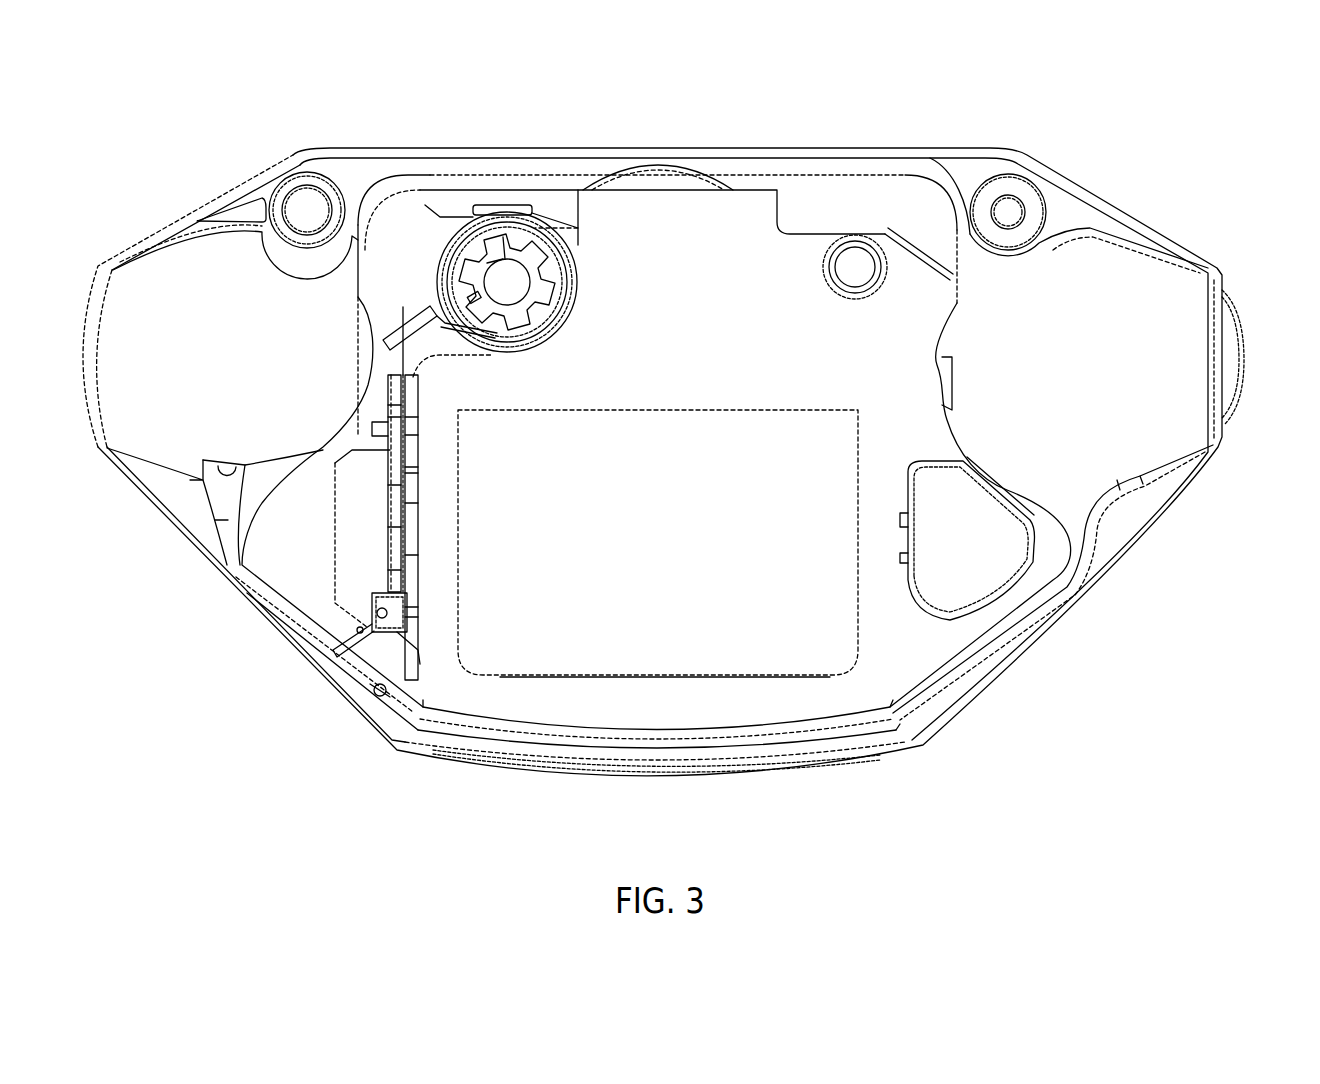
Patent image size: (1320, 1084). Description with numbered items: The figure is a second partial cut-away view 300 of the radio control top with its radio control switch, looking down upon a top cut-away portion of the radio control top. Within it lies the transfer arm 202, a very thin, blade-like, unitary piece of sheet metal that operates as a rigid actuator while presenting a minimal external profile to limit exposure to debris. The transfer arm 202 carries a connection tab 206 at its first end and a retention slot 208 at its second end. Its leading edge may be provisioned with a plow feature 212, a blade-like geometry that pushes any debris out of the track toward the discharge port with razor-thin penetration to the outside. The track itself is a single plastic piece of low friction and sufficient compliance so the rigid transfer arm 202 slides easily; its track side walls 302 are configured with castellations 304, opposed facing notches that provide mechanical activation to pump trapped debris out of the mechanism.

The second partial cut-away view 300 is at (1245, 121).
The transfer arm 202 is at (408, 436).
The connection tab 206 is at (368, 633).
The retention slot 208 is at (400, 320).
The plow feature 212 is at (412, 615).
The track side walls 302 is at (357, 455).
The castellations 304 is at (412, 557).